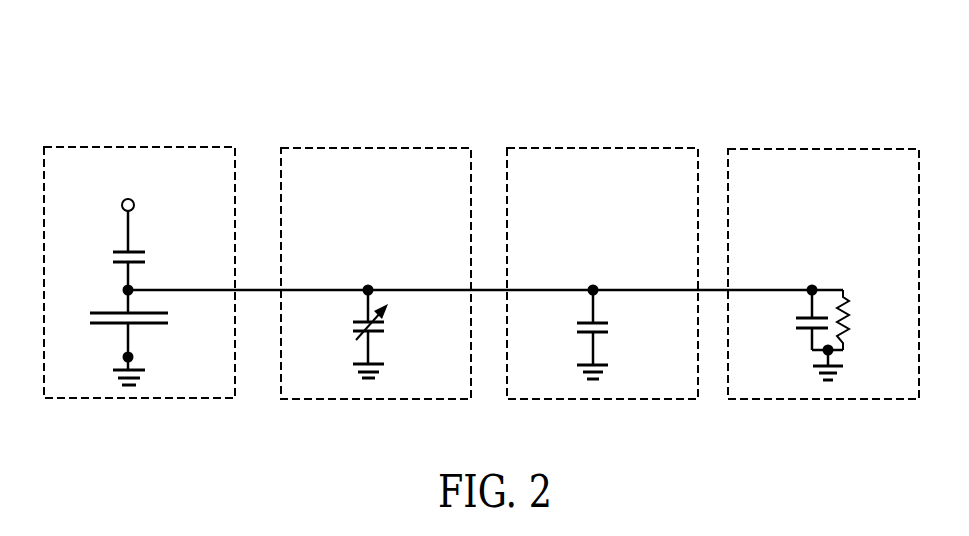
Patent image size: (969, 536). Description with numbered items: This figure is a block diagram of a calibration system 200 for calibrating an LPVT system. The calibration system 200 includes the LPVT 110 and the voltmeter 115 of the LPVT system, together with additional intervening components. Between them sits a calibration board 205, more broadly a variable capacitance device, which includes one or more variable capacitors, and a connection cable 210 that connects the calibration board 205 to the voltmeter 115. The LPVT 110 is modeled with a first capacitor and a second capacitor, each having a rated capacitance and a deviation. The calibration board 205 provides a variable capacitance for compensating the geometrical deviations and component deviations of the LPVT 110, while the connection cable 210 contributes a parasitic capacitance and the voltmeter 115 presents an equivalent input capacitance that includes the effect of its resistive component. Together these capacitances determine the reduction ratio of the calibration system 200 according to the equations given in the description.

The calibration system 200 is at (126, 56).
The LPVT 110 is at (140, 398).
The calibration board 205 is at (376, 399).
The connection cable 210 is at (598, 399).
The voltmeter 115 is at (822, 399).